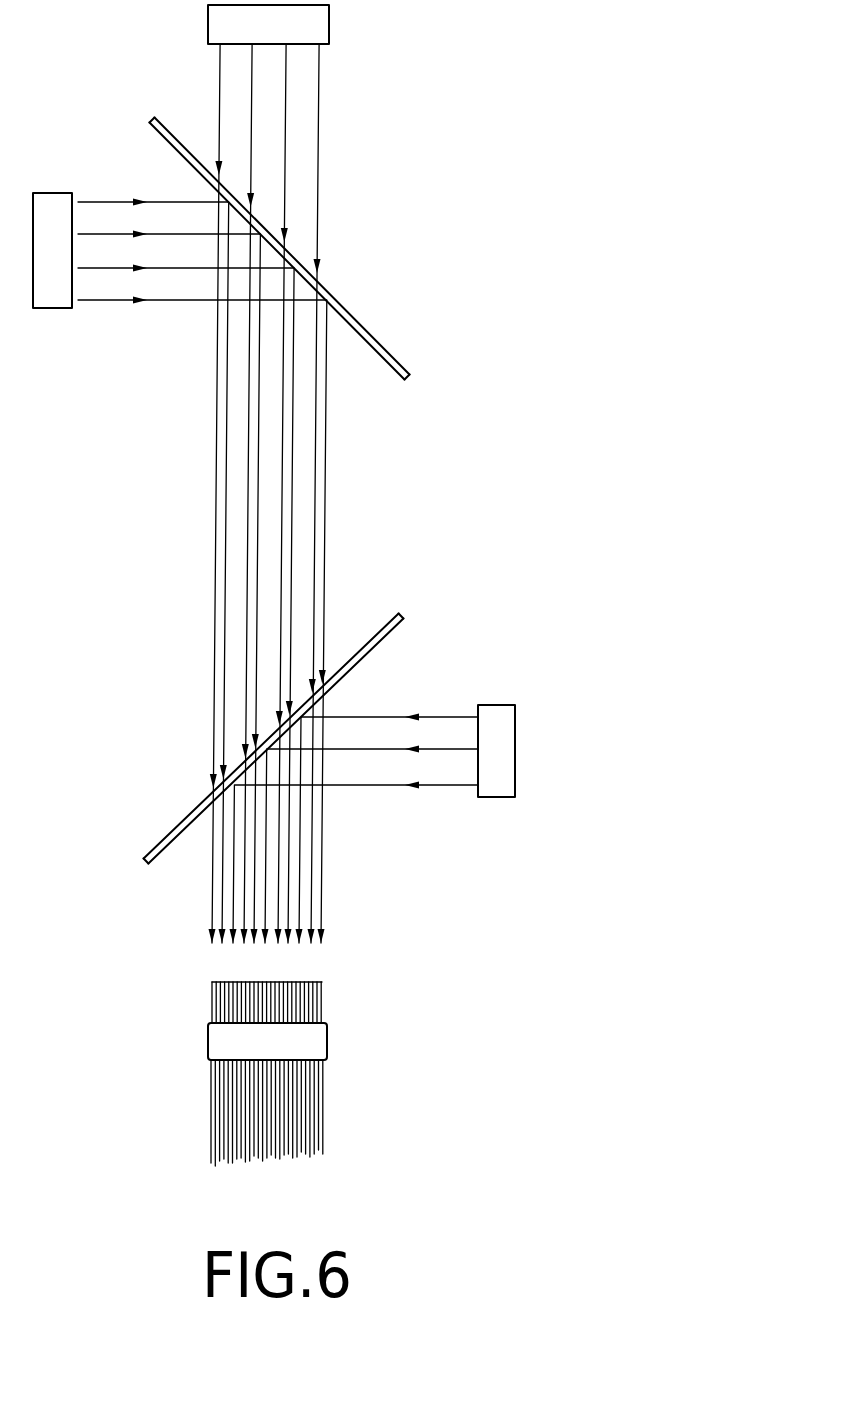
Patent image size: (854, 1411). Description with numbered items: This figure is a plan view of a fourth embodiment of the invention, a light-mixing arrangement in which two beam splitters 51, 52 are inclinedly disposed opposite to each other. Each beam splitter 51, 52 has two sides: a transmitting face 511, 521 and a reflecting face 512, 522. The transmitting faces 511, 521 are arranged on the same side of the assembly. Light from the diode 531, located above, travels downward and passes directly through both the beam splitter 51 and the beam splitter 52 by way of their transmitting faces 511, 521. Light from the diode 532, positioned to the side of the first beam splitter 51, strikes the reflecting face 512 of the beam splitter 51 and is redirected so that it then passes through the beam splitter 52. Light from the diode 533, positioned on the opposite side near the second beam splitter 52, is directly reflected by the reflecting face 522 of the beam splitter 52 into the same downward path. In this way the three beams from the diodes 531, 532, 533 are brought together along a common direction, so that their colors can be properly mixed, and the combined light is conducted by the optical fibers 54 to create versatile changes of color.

The diode 531 is at (307, 25).
The diode 532 is at (52, 288).
The diode 533 is at (495, 752).
The beam splitter 51 is at (339, 302).
The transmitting face 511 is at (400, 340).
The reflecting face 512 is at (375, 360).
The beam splitter 52 is at (290, 753).
The transmitting face 521 is at (165, 818).
The reflecting face 522 is at (168, 858).
The optical fibers 54 is at (293, 1108).